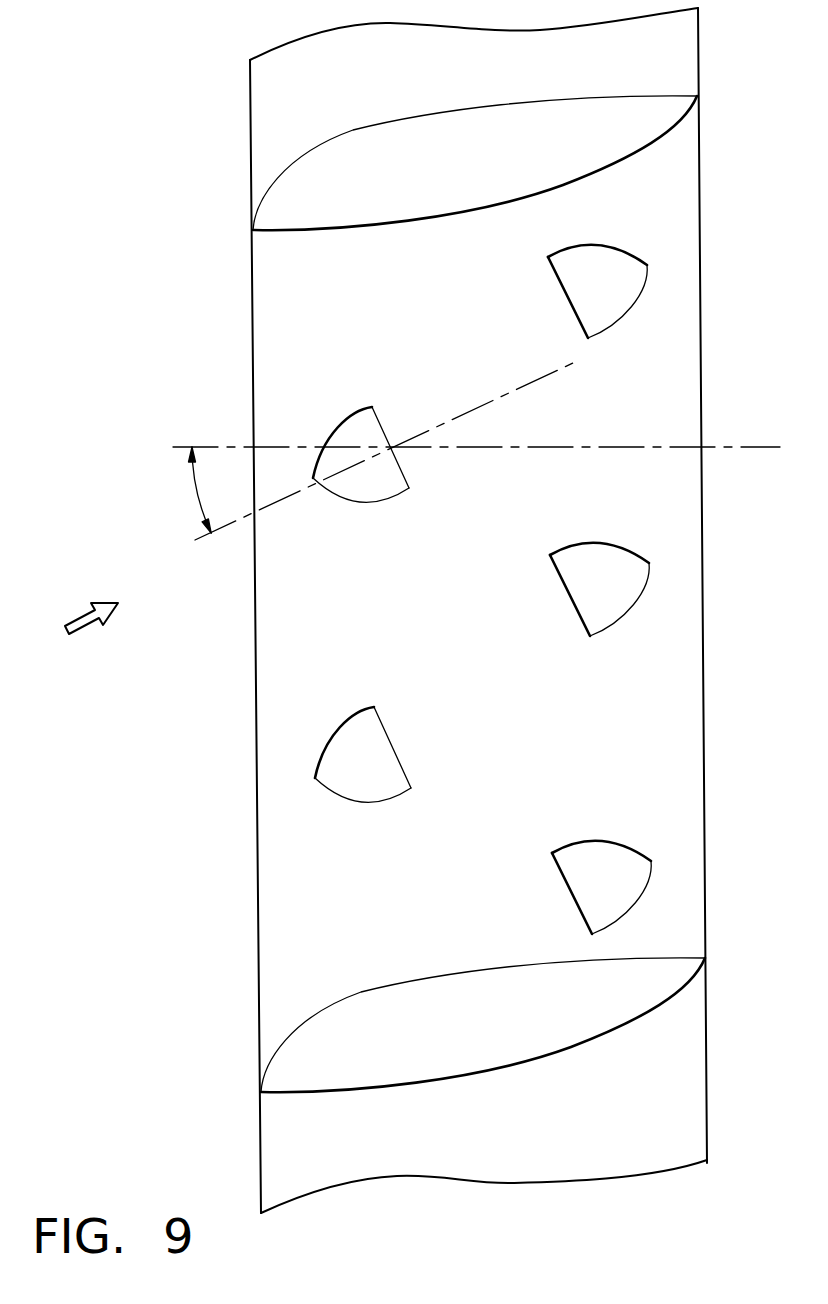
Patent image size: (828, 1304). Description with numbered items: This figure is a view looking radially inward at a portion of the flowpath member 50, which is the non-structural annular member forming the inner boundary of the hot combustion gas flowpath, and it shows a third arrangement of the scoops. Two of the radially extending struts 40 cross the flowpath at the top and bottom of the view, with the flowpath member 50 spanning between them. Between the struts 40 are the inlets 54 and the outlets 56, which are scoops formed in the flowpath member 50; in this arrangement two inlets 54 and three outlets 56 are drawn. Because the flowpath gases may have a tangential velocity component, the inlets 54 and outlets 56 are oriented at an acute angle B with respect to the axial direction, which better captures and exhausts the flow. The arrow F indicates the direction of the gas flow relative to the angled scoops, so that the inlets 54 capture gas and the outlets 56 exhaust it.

The strut 40 is at (497, 175).
The flowpath member 50 is at (496, 543).
The inlet 54 is at (345, 422).
The outlet 56 is at (597, 243).
The acute angle B is at (193, 492).
The flow direction F is at (80, 614).